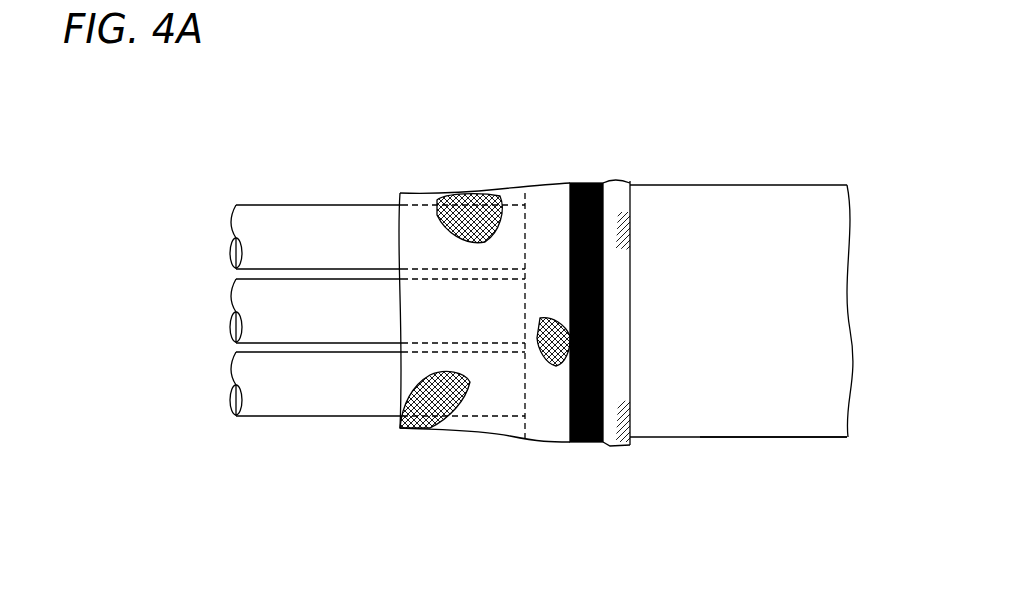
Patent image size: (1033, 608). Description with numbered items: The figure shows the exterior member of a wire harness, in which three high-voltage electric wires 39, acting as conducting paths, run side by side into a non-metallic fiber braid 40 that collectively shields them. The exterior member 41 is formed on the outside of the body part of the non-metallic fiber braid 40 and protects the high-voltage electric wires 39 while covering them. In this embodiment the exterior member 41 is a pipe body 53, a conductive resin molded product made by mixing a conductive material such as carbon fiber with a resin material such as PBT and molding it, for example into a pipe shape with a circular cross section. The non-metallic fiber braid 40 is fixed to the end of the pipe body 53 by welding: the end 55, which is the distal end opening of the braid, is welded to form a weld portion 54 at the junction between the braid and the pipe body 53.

The high-voltage electric wire 39 is at (275, 228).
The non-metallic fiber braid 40 is at (483, 188).
The exterior member 41 is at (763, 185).
The pipe body 53 is at (792, 410).
The weld portion 54 is at (587, 183).
The end 55 is at (632, 257).